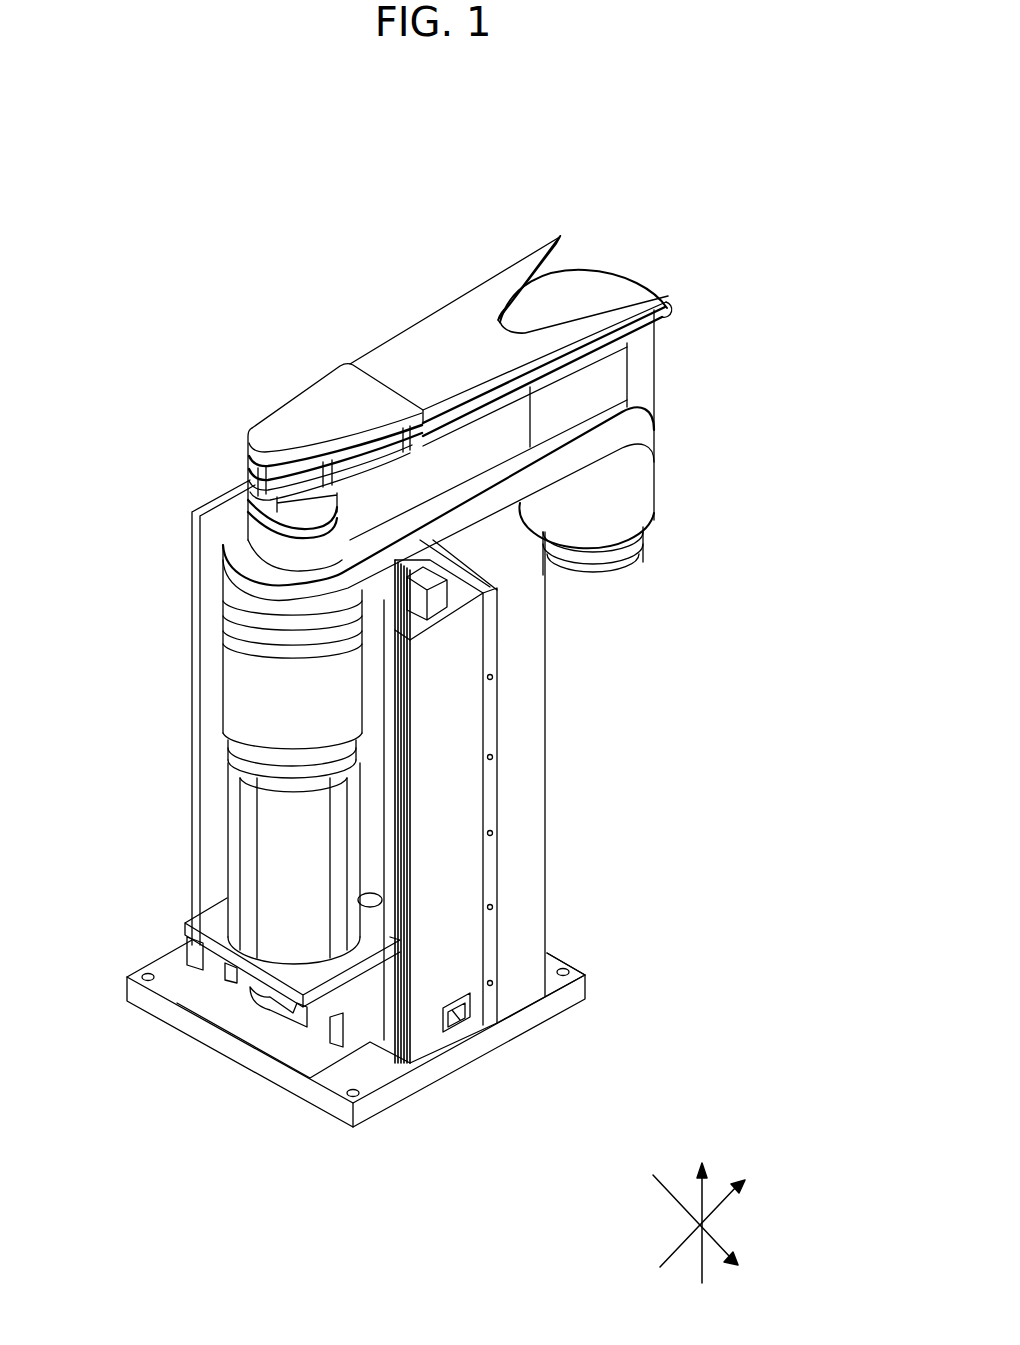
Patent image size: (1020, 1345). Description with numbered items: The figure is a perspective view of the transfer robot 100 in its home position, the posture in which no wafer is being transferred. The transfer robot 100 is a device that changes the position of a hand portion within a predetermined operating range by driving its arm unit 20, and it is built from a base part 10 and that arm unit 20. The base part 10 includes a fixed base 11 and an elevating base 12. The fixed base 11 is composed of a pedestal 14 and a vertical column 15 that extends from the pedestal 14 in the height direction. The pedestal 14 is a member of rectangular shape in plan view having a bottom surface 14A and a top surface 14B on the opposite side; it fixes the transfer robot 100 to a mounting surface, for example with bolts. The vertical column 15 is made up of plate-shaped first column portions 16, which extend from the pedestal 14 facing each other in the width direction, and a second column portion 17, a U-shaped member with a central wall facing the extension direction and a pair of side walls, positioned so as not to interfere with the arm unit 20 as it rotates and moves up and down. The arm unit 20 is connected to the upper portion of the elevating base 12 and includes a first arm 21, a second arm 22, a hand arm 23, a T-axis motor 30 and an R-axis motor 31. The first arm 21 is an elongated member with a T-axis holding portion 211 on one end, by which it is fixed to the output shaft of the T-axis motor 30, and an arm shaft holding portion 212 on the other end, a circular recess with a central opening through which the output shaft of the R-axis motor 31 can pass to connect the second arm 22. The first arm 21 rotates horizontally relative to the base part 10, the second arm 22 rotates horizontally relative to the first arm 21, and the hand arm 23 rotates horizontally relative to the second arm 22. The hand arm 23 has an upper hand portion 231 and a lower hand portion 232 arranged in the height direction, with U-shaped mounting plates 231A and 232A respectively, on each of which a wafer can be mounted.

The transfer robot 100 is at (706, 210).
The base part 10 is at (668, 658).
The fixed base 11 is at (755, 1020).
The elevating base 12 is at (242, 832).
The pedestal 14 is at (688, 945).
The bottom surface 14A is at (557, 1012).
The top surface 14B is at (570, 971).
The vertical column 15 is at (688, 680).
The first column portions 16 is at (530, 823).
The second column portion 17 is at (457, 732).
The arm unit 20 is at (260, 392).
The first arm 21 is at (315, 573).
The T-axis holding portion 211 is at (233, 540).
The arm shaft holding portion 212 is at (653, 402).
The second arm 22 is at (373, 490).
The hand arm 23 is at (465, 120).
The upper hand portion 231 is at (423, 355).
The mounting plate 231A is at (500, 288).
The lower hand portion 232 is at (471, 355).
The mounting plate 232A is at (585, 252).
The T-axis motor 30 is at (265, 707).
The R-axis motor 31 is at (620, 503).